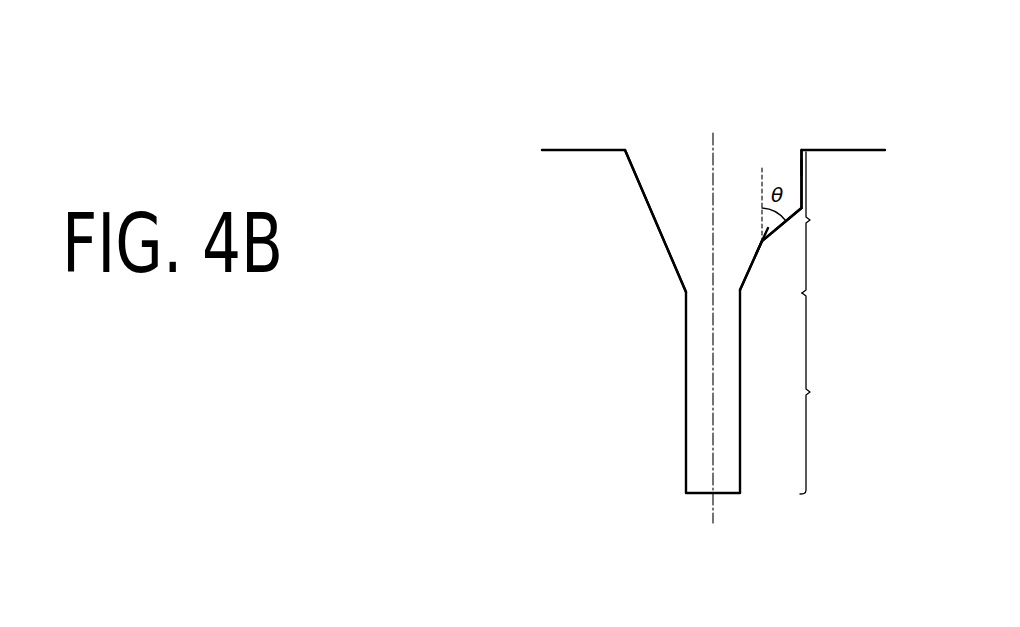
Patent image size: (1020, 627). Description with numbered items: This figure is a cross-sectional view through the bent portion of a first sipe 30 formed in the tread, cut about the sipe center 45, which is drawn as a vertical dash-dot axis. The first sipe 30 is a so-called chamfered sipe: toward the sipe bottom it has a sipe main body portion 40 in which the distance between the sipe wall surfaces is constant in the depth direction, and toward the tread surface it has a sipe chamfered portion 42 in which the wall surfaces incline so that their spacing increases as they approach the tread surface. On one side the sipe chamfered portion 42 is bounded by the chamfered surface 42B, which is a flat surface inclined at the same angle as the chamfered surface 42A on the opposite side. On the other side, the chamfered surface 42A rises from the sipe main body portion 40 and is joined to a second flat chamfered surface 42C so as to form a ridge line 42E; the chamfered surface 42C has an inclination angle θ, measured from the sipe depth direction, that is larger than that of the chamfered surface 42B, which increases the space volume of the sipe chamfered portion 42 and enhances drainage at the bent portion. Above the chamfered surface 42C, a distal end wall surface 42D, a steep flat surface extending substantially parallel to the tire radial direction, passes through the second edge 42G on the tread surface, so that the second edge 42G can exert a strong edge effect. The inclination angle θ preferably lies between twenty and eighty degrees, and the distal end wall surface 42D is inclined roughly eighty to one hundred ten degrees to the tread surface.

The first sipe 30 is at (715, 85).
The sipe main body portion 40 is at (820, 393).
The sipe chamfered portion 42 is at (823, 222).
The chamfered surface 42A is at (750, 256).
The chamfered surface 42B is at (635, 173).
The chamfered surface 42C is at (790, 215).
The distal end wall surface 42D is at (803, 170).
The ridge line 42E is at (762, 237).
The second edge 42G is at (802, 150).
The sipe center 45 is at (712, 344).